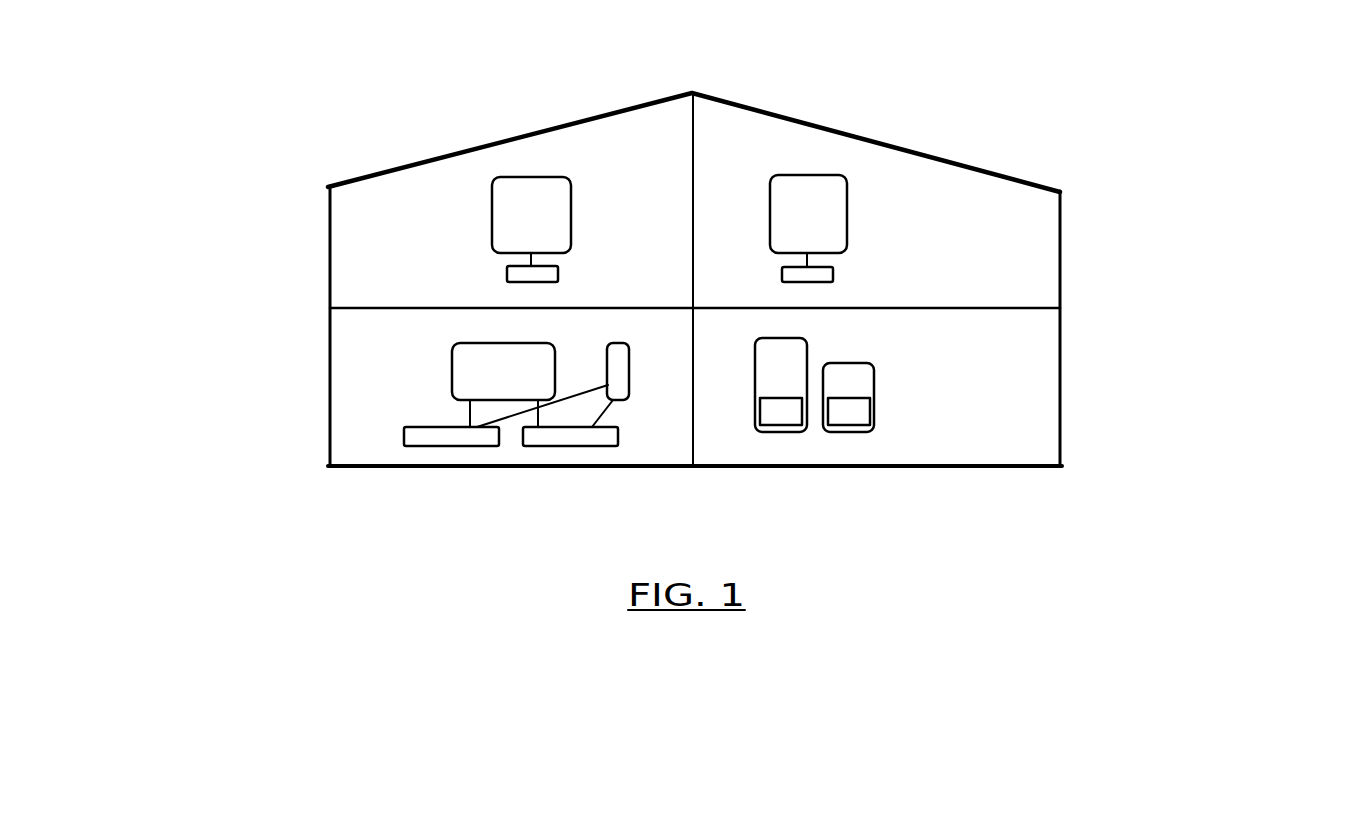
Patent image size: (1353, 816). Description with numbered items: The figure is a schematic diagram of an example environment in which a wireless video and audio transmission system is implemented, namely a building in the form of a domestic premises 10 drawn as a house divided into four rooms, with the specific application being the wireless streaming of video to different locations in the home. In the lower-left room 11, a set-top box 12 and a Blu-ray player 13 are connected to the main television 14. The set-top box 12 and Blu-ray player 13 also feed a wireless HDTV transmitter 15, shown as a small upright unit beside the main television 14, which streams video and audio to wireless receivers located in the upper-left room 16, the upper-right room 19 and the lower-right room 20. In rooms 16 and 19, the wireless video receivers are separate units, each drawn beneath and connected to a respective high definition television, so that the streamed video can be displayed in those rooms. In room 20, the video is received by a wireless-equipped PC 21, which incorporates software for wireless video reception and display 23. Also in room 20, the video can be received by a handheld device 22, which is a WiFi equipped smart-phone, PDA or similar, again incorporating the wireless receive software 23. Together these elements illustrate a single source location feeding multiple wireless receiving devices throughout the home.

The domestic premises 10 is at (383, 104).
The room 11 is at (366, 349).
The set-top box 12 is at (442, 435).
The Blu-ray player 13 is at (567, 435).
The main television 14 is at (472, 370).
The wireless HDTV transmitter 15 is at (618, 350).
The room 16 is at (367, 217).
The room 19 is at (1043, 231).
The room 20 is at (1043, 351).
The wireless-equipped PC 21 is at (790, 362).
The handheld device 22 is at (863, 372).
The wireless receive software 23 is at (852, 418).